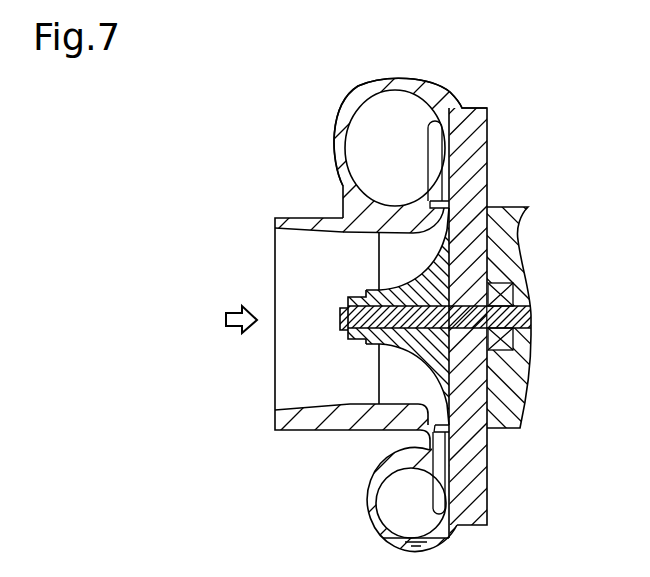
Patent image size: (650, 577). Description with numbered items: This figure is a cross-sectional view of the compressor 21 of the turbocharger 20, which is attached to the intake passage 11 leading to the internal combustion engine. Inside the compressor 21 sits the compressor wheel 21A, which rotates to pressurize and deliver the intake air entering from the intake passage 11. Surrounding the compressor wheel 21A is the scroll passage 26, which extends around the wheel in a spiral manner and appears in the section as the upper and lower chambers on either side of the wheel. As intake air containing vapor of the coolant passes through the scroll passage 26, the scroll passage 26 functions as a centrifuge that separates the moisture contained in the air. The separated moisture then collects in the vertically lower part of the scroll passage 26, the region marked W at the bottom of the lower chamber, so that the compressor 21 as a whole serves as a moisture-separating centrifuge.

The compressor 21 is at (291, 107).
The turbocharger 20 is at (382, 123).
The compressor wheel 21A is at (352, 296).
The scroll passage 26 is at (402, 166).
The intake passage 11 is at (286, 404).
The vertically lower part of the scroll passage W is at (386, 539).